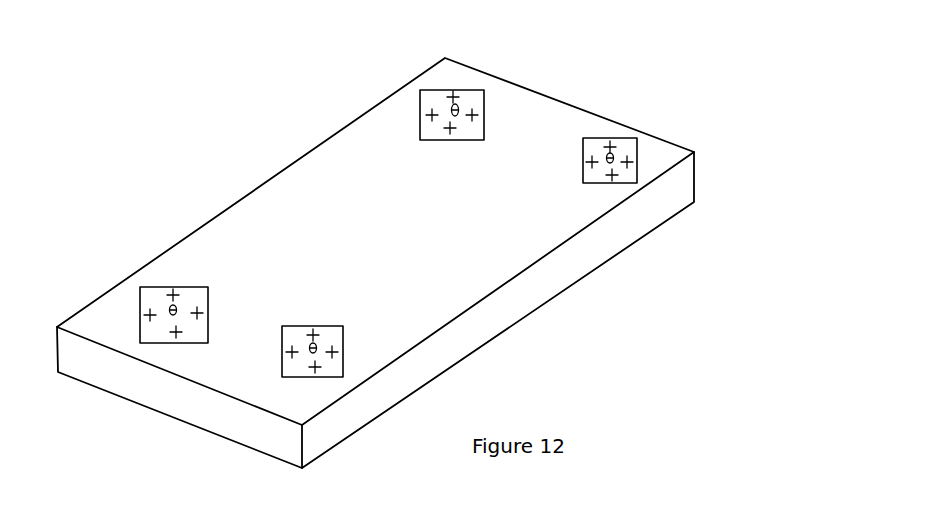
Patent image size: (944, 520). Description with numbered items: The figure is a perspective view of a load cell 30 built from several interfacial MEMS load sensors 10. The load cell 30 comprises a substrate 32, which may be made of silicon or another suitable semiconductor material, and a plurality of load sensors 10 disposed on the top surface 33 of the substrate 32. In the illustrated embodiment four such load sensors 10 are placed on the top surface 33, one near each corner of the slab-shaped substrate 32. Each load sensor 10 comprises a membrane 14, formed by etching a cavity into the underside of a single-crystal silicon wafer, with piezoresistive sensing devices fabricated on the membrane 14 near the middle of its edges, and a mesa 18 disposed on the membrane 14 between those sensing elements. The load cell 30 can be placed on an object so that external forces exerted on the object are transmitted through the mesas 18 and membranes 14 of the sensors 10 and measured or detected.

The load sensor 10 is at (125, 313).
The membrane 14 is at (155, 300).
The mesa 18 is at (168, 313).
The load cell 30 is at (387, 234).
The substrate 32 is at (608, 235).
The top surface 33 is at (472, 272).